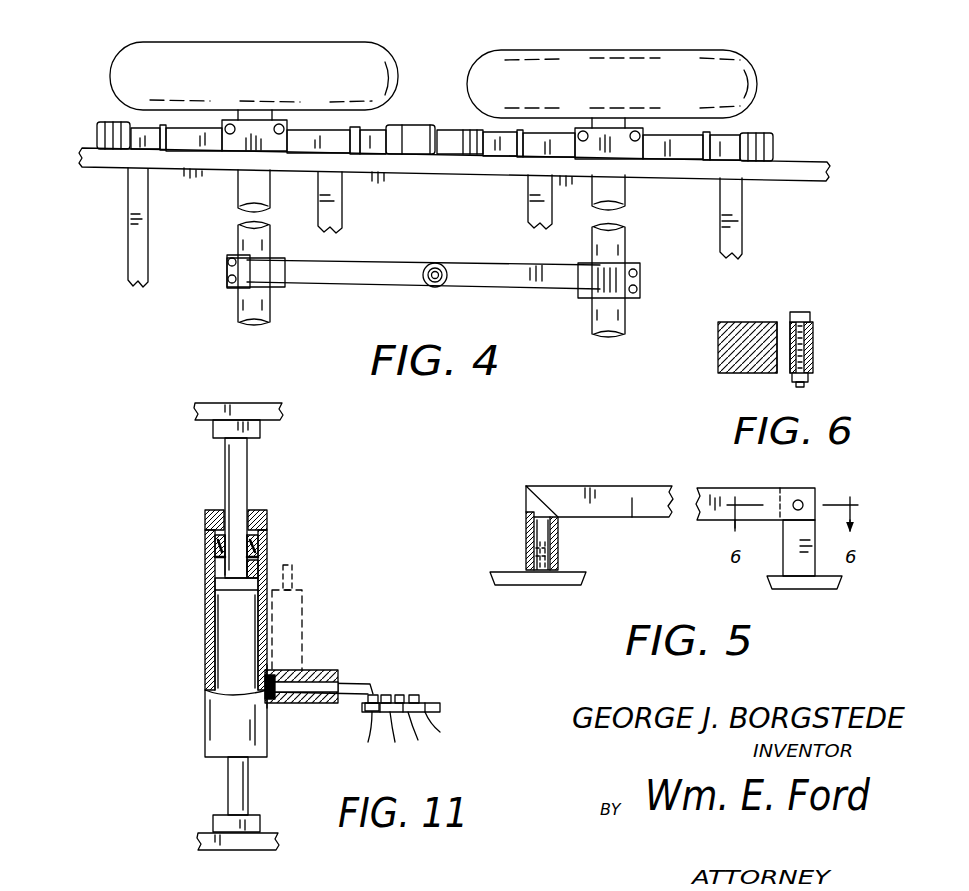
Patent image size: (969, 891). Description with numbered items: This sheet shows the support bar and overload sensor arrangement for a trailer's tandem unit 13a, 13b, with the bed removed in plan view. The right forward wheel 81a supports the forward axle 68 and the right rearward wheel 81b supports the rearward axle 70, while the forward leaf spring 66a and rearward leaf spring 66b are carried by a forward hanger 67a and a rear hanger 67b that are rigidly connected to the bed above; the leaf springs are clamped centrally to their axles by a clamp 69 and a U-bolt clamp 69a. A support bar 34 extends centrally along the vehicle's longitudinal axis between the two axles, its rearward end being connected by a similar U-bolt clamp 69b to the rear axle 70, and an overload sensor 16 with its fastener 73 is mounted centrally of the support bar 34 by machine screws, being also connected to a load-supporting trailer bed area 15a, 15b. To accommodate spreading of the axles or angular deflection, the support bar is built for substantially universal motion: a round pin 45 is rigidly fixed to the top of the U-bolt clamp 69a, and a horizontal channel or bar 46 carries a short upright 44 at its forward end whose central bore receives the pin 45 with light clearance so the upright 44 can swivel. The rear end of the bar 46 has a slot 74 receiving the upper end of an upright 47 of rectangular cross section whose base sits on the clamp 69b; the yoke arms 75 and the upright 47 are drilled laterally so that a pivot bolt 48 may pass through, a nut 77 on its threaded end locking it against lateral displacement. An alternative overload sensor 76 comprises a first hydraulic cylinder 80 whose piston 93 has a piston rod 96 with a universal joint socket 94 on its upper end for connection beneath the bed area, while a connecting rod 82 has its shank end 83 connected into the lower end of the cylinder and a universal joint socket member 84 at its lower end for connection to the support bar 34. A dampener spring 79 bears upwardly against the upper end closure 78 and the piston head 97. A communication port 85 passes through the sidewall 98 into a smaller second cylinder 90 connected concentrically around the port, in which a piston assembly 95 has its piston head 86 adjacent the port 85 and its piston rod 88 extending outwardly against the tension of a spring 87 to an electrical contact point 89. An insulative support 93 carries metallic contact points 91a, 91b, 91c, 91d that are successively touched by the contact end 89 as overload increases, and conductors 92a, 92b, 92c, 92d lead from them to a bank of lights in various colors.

In FIG. 4, the forward tandem unit 13a is at (94, 227).
In FIG. 4, the rearward tandem unit 13b is at (126, 258).
In FIG. 11, the load-supporting trailer bed area 15a is at (238, 394).
In FIG. 11, the load-supporting trailer bed area 15b is at (273, 403).
In FIG. 4, the overload sensor 16 is at (464, 257).
In FIG. 4, the support bar 34 is at (334, 288).
In FIG. 5, the support bar 34 is at (633, 478).
In FIG. 11, the support bar 34 is at (235, 848).
In FIG. 5, the upright 44 is at (526, 522).
In FIG. 5, the pin 45 is at (548, 548).
In FIG. 6, the bar 46 is at (758, 325).
In FIG. 5, the bar 46 is at (632, 503).
In FIG. 6, the upright 47 is at (813, 352).
In FIG. 5, the upright 47 is at (792, 555).
In FIG. 6, the pivot bolt 48 is at (803, 316).
In FIG. 5, the pivot bolt 48 is at (803, 500).
In FIG. 4, the forward leaf spring 66a is at (300, 136).
In FIG. 4, the rearward leaf spring 66b is at (535, 146).
In FIG. 4, the forward hanger 67a is at (97, 133).
In FIG. 4, the rear hanger 67b is at (412, 128).
In FIG. 4, the forward axle 68 is at (237, 305).
In FIG. 4, the clamp block 69 is at (235, 138).
In FIG. 4, the U-bolt clamp 69a is at (625, 152).
In FIG. 5, the U-bolt clamp 69a is at (505, 570).
In FIG. 4, the U-bolt clamp 69b is at (642, 284).
In FIG. 5, the U-bolt clamp 69b is at (840, 580).
In FIG. 4, the rear axle 70 is at (610, 310).
In FIG. 4, the pivot bolt 73 is at (450, 274).
In FIG. 6, the slot 74 is at (770, 352).
In FIG. 6, the arms 75 is at (794, 322).
In FIG. 11, the overload sensor 76 is at (213, 621).
In FIG. 6, the nut 77 is at (810, 382).
In FIG. 11, the upper end closure 78 is at (266, 518).
In FIG. 11, the dampener spring 79 is at (213, 553).
In FIG. 11, the first hydraulic cylinder 80 is at (203, 668).
In FIG. 4, the right forward wheel 81a is at (330, 62).
In FIG. 4, the right rearward wheel 81b is at (685, 70).
In FIG. 11, the connecting rod 82 is at (226, 792).
In FIG. 11, the shank end 83 is at (228, 774).
In FIG. 11, the universal joint socket member 84 is at (215, 823).
In FIG. 11, the communication port 85 is at (267, 714).
In FIG. 11, the piston head 86 is at (275, 702).
In FIG. 11, the spring 87 is at (295, 702).
In FIG. 11, the piston rod 88 is at (296, 582).
In FIG. 11, the electrical contact point 89 is at (374, 698).
In FIG. 11, the second cylinder 90 is at (304, 608).
In FIG. 11, the metallic contact point 91a is at (367, 712).
In FIG. 11, the metallic contact point 91b is at (388, 698).
In FIG. 11, the metallic contact point 91c is at (403, 698).
In FIG. 11, the metallic contact point 91d is at (420, 700).
In FIG. 11, the conductor 92a is at (368, 742).
In FIG. 11, the conductor 92b is at (395, 745).
In FIG. 11, the conductor 92c is at (418, 742).
In FIG. 11, the conductor 92d is at (440, 733).
In FIG. 11, the piston 93 is at (206, 491).
In FIG. 11, the universal joint socket 94 is at (225, 430).
In FIG. 11, the piston assembly 95 is at (383, 660).
In FIG. 11, the piston rod 96 is at (247, 476).
In FIG. 11, the piston head 97 is at (232, 583).
In FIG. 11, the sidewall 98 is at (150, 716).